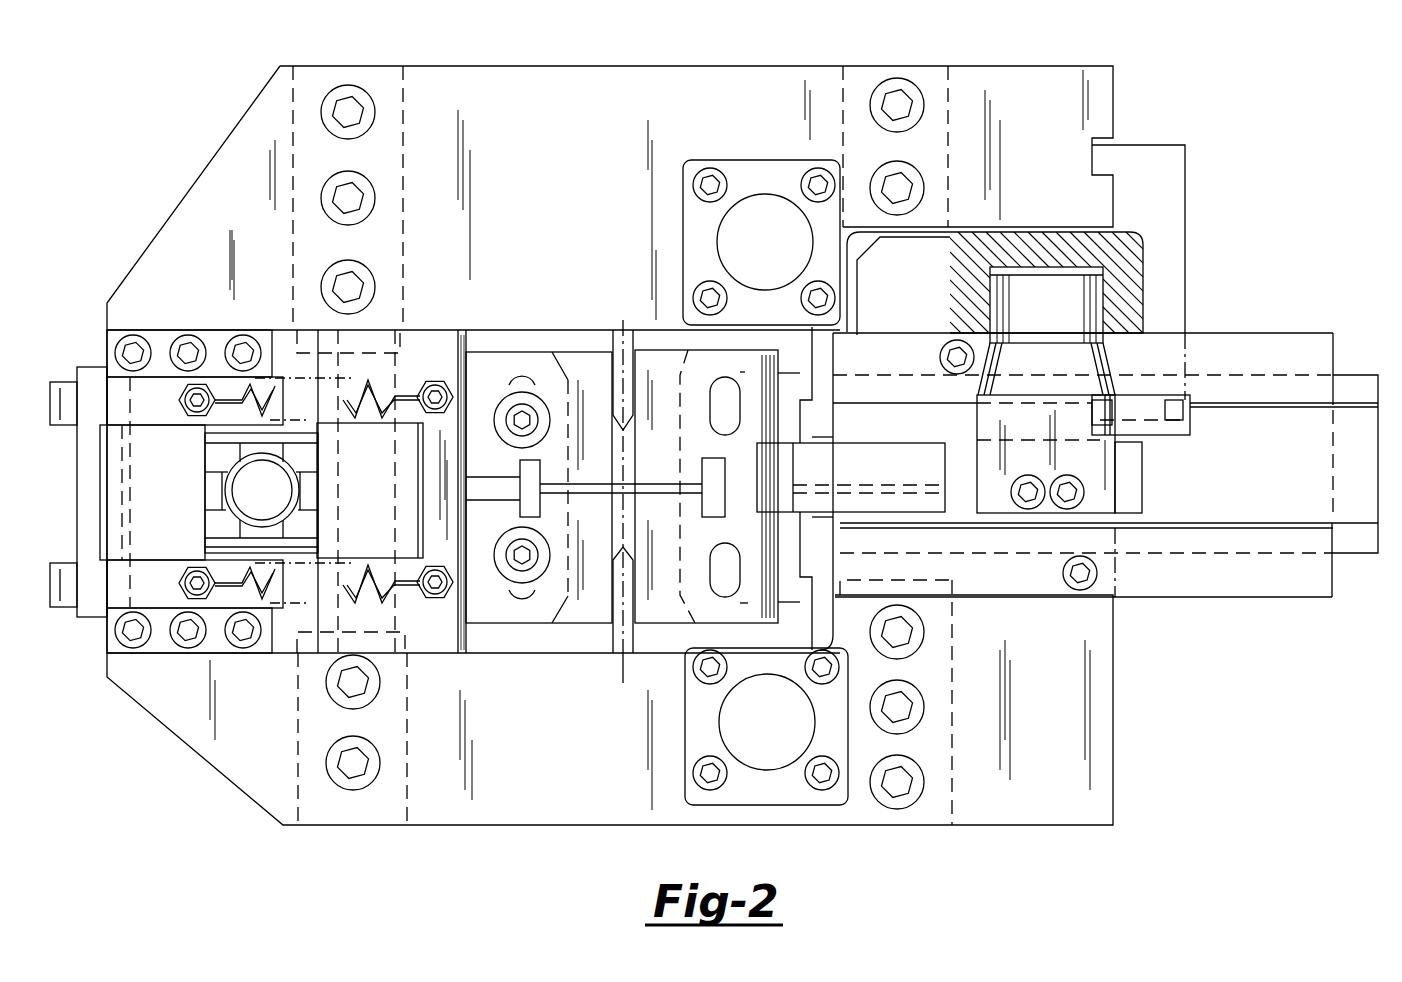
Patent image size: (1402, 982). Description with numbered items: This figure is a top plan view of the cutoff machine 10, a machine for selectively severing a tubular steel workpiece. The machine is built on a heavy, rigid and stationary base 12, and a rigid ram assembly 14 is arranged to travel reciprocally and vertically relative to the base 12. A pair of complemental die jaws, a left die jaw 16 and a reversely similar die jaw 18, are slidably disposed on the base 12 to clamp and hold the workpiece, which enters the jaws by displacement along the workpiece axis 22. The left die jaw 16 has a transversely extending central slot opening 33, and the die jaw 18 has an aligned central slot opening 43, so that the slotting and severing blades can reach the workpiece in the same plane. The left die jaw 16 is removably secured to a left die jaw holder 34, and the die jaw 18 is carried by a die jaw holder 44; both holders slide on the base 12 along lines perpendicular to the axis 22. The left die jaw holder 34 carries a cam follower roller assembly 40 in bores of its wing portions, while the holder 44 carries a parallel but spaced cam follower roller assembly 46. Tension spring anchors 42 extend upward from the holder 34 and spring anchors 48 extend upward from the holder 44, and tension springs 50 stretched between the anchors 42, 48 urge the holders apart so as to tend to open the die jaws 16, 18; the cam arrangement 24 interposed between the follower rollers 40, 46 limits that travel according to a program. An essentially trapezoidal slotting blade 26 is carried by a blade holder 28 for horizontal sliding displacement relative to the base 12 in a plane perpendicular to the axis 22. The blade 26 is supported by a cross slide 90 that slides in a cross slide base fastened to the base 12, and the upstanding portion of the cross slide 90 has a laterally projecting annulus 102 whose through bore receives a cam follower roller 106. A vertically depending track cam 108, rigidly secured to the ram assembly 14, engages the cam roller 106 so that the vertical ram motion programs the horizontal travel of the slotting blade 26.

The cutoff machine 10 is at (203, 128).
The base 12 is at (567, 813).
The ram assembly 14 is at (466, 332).
The left die jaw 16 is at (540, 366).
The die jaw 18 is at (660, 365).
The axis 22 is at (620, 683).
The cam arrangement 24 is at (250, 432).
The slotting blade 26 is at (745, 503).
The blade holder 28 is at (918, 440).
The central slot opening 33 is at (582, 492).
The left die jaw holder 34 is at (462, 650).
The cam follower roller assembly 40 is at (378, 528).
The tension spring anchors 42 is at (455, 393).
The central slot opening 43 is at (642, 490).
The die jaw holder 44 is at (110, 382).
The cam follower roller assembly 46 is at (145, 500).
The spring anchors 48 is at (205, 410).
The tension springs 50 is at (390, 380).
The cross slide 90 is at (1100, 470).
The annulus 102 is at (1110, 365).
The cam follower roller 106 is at (1090, 300).
The track cam 108 is at (1010, 245).